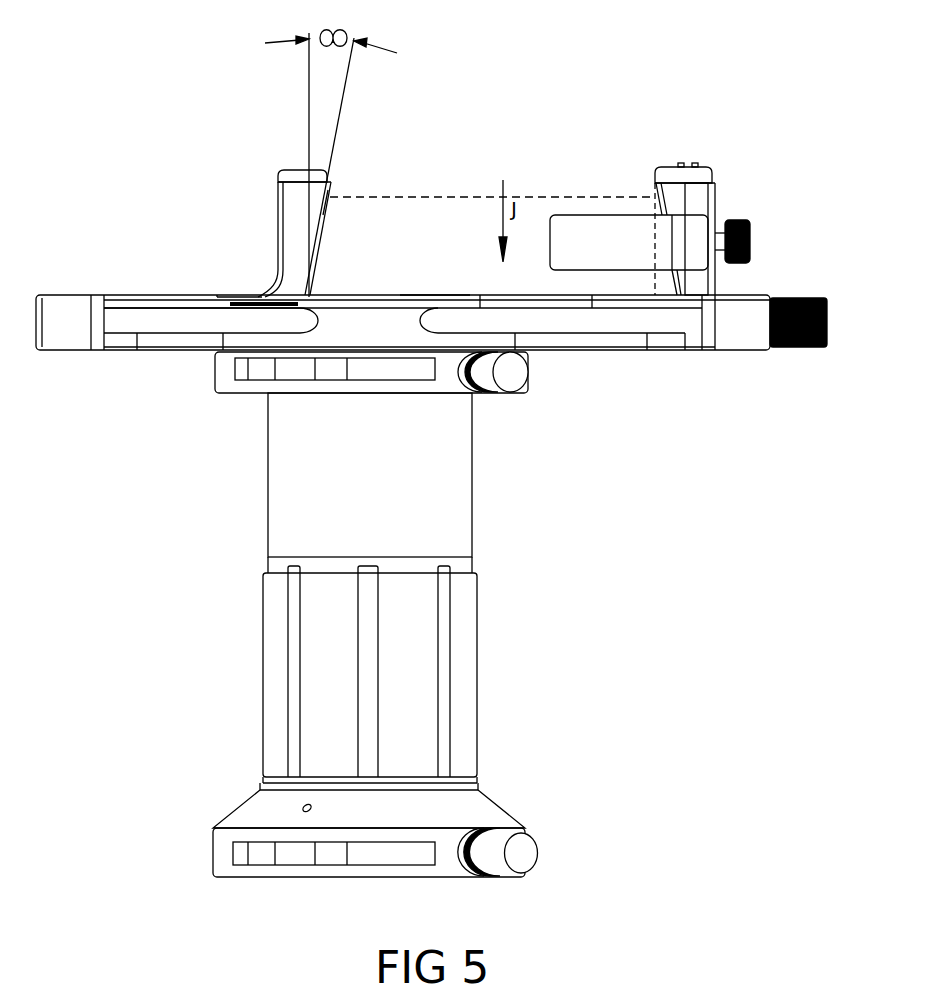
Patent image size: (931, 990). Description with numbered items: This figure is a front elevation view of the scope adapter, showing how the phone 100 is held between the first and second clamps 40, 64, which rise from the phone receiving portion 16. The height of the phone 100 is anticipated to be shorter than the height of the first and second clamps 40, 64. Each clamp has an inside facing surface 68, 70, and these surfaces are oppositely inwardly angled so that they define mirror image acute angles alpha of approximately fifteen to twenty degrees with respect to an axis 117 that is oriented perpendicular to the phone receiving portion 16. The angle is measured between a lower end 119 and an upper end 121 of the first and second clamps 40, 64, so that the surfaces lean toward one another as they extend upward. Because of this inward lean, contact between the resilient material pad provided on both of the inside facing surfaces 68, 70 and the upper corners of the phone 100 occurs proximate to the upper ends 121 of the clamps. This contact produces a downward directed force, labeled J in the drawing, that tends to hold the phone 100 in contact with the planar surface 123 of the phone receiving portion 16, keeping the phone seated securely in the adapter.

The phone receiving portion 16 is at (228, 294).
The first clamp 40 is at (707, 172).
The second clamp 64 is at (297, 172).
The inside facing surface 68 is at (336, 199).
The inside facing surface 70 is at (640, 190).
The phone 100 is at (443, 197).
The axis 117 is at (309, 53).
The lower end 119 is at (292, 287).
The upper end 121 is at (288, 170).
The planar surface 123 is at (433, 290).